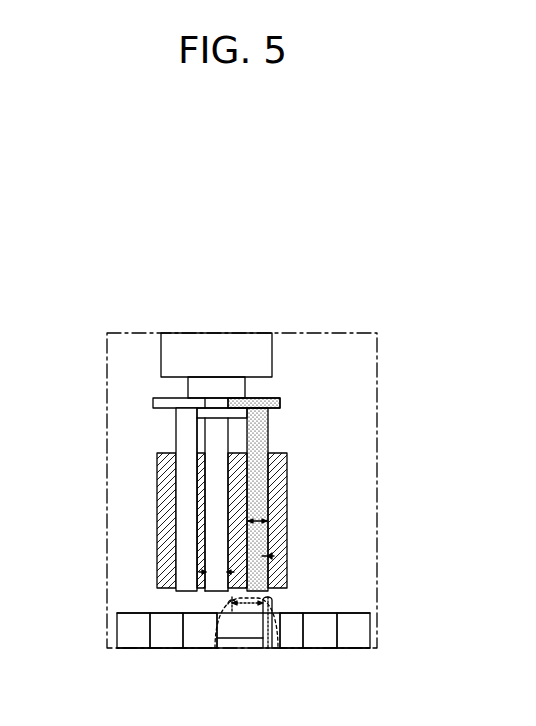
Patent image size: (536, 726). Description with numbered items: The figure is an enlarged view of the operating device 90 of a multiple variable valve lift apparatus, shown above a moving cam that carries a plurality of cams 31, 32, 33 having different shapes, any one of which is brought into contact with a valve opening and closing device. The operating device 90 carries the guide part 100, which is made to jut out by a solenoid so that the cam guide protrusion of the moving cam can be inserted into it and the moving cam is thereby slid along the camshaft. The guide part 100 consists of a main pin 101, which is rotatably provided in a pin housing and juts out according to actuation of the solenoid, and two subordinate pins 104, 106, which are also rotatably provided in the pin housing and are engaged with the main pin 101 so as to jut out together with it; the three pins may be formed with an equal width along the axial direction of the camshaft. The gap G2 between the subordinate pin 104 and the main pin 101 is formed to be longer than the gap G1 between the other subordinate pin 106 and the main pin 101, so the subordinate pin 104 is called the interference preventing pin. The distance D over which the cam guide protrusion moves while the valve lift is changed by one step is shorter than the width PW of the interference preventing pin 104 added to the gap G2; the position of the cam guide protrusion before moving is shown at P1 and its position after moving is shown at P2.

The second operating device 90 is at (282, 357).
The second guide part 100 is at (289, 468).
The main pin 101 is at (222, 487).
The subordinate pin (interference preventing pin) 104 is at (265, 425).
The subordinate pin 106 is at (185, 435).
The width of the interference preventing pin PW is at (270, 516).
The gap G1 is at (203, 571).
The gap G2 is at (274, 556).
The cam 31 is at (193, 640).
The cam 32 is at (160, 640).
The cam 33 is at (130, 640).
The position of the cam guide protrusion before moving P1 is at (219, 636).
The position of the cam guide protrusion after moving P2 is at (270, 650).
The distance D is at (251, 608).